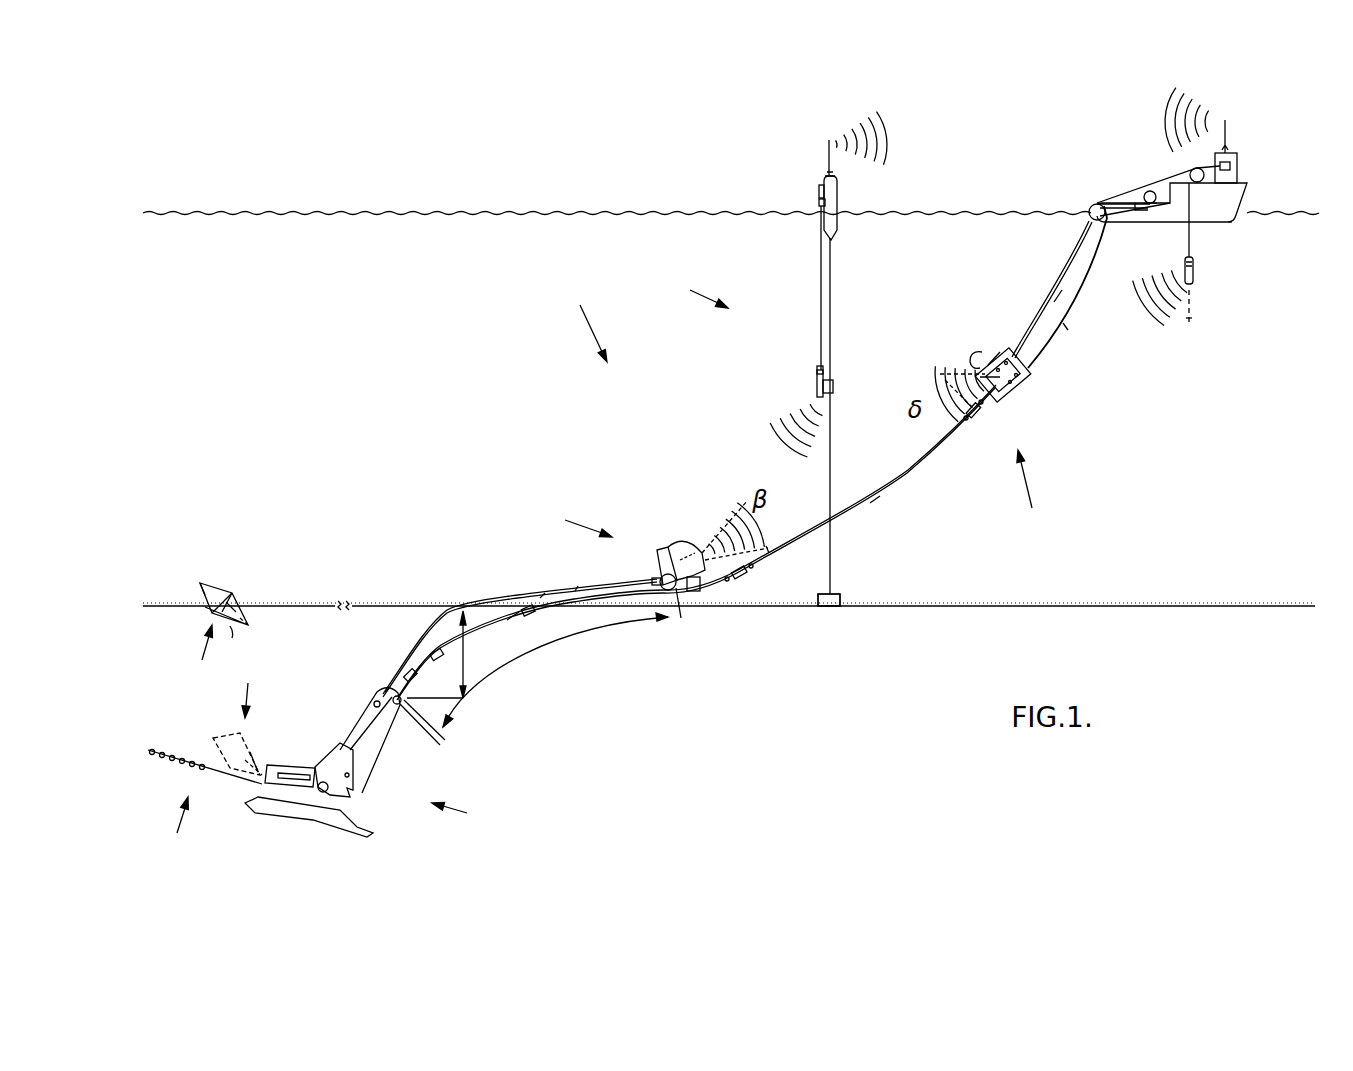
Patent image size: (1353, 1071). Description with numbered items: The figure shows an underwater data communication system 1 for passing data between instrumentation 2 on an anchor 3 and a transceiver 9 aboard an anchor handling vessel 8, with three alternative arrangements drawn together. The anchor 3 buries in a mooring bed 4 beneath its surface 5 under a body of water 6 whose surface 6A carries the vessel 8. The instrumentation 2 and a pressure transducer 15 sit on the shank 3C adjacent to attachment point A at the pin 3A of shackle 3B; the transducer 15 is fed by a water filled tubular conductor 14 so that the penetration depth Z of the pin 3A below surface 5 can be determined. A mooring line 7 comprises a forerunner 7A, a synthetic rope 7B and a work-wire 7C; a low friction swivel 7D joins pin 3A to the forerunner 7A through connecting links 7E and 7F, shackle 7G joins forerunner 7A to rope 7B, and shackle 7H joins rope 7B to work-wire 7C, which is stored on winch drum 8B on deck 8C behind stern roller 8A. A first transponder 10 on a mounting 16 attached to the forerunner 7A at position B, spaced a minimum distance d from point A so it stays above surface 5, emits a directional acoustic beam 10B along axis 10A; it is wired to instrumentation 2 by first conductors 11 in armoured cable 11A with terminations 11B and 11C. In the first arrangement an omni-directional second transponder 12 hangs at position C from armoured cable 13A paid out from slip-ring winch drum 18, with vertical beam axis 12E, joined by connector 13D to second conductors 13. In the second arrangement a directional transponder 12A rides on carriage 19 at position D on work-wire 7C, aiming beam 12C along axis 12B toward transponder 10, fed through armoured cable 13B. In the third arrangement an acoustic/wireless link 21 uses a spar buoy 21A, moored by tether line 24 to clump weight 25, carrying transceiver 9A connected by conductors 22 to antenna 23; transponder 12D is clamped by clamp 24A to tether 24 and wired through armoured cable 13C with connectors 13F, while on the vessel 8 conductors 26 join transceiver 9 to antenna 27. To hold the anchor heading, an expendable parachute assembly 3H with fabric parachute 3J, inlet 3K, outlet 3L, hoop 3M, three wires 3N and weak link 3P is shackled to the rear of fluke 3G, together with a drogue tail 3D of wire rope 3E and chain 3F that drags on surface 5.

The underwater data communication system 1 is at (584, 320).
The instrumentation 2 is at (374, 704).
The anchor 3 is at (467, 815).
The pin 3A is at (420, 730).
The shackle 3B is at (405, 703).
The shank 3C is at (372, 753).
The drogue tail 3D is at (177, 828).
The wire rope 3E is at (240, 785).
The chain 3F is at (160, 756).
The fluke 3G is at (322, 826).
The expendable parachute assembly 3H is at (224, 671).
The fabric parachute 3J is at (210, 600).
The inlet 3K is at (233, 603).
The outlet 3L is at (203, 583).
The hoop 3M is at (225, 592).
The wires 3N is at (242, 605).
The breakable weak link 3P is at (246, 622).
The mooring bed 4 is at (745, 652).
The surface 5 is at (319, 605).
The body of water 6 is at (857, 411).
The surface of body of water 6A is at (925, 212).
The mooring line 7 is at (493, 621).
The forerunner 7A is at (513, 618).
The synthetic rope 7B is at (875, 508).
The work-wire 7C is at (1061, 290).
The low friction swivel 7D is at (435, 663).
The connecting link 7E is at (408, 677).
The connecting link 7F is at (457, 645).
The shackle 7G is at (745, 575).
The shackle 7H is at (978, 415).
The anchor handling vessel 8 is at (1237, 200).
The stern roller 8A is at (1090, 208).
The winch drum 8B is at (1152, 205).
The deck 8C is at (1143, 212).
The transceiver 9 is at (1232, 163).
The transceiver 9A is at (819, 193).
The first transponder 10 is at (672, 550).
The axis 10A is at (740, 546).
The directional acoustic beam 10B is at (734, 518).
The first conductors 11 is at (503, 598).
The armoured cable 11A is at (540, 595).
The termination 11B is at (658, 578).
The termination 11C is at (387, 688).
The second transponder 12 is at (1194, 283).
The second transponder 12A is at (985, 358).
The emission beam axis 12B is at (930, 370).
The directional acoustic beam 12C is at (955, 372).
The second transponder 12D is at (817, 382).
The emission beam axis 12E is at (1190, 320).
The second conductors 13 is at (821, 275).
The armoured cable 13A is at (1194, 262).
The armoured cable 13B is at (1195, 170).
The armoured cable 13C is at (821, 338).
The wet-mateable mechanical and electrical connector 13D is at (1196, 275).
The wet-mateable mechanical and electrical connectors 13F is at (819, 205).
The water filled tubular conductor 14 is at (575, 589).
The pressure transducer 15 is at (398, 706).
The mounting 16 is at (573, 518).
The slip-ring equipped winch drum 18 is at (1238, 220).
The carriage 19 is at (1033, 491).
The acoustic/wireless link 21 is at (695, 288).
The spar buoy 21A is at (836, 222).
The conductors 22 is at (827, 176).
The antenna 23 is at (829, 160).
The tether line 24 is at (832, 277).
The clamp 24A is at (833, 384).
The clump weight 25 is at (840, 598).
The conductors 26 is at (1234, 160).
The antenna 27 is at (1225, 125).
The attachment point A is at (394, 687).
The position B is at (681, 614).
The position C is at (1197, 290).
The position D is at (1030, 378).
The point E is at (840, 404).
The penetration depth Z is at (446, 654).
The minimum spacing distance d is at (555, 670).